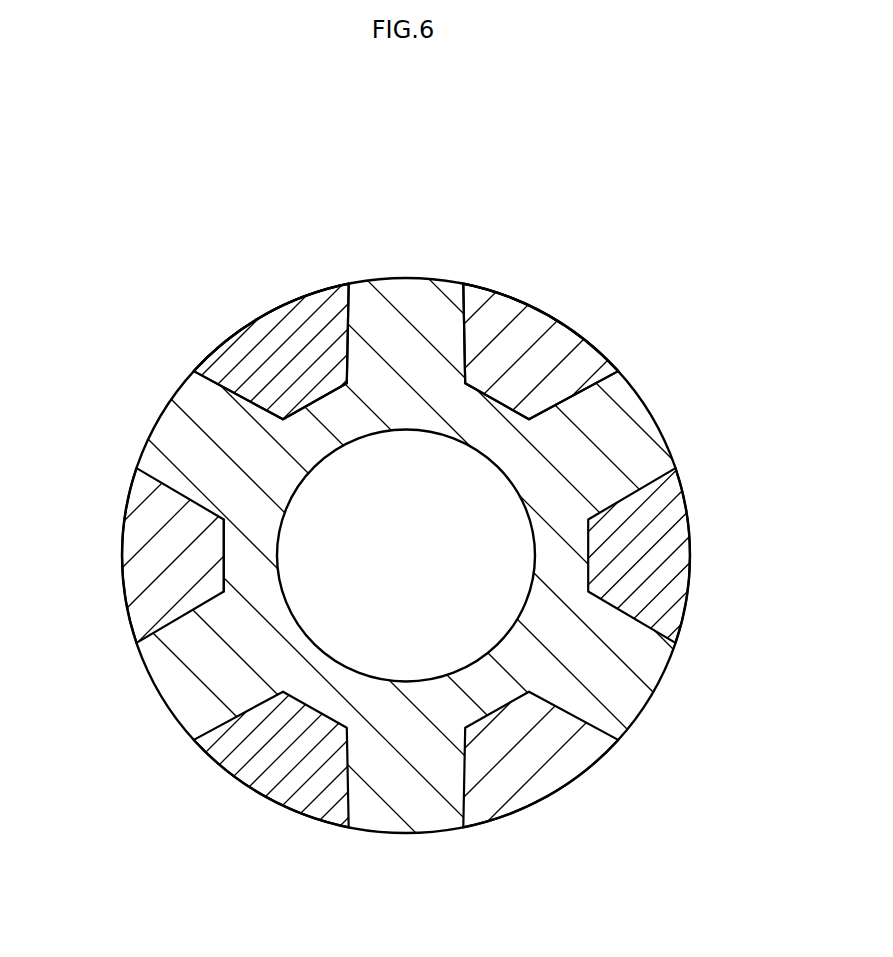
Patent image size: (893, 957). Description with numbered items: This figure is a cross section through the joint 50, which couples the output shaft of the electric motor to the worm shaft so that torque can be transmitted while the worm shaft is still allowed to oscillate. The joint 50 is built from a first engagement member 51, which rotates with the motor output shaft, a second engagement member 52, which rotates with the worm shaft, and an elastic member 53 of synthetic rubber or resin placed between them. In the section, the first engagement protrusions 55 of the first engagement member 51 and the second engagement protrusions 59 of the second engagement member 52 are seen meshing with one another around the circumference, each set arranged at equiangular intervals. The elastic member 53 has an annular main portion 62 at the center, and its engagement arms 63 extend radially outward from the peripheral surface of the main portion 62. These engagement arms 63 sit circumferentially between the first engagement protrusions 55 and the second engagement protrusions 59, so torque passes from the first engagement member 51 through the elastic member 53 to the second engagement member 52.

The joint 50 is at (626, 220).
The first engagement member 51 is at (542, 309).
The second engagement member 52 is at (278, 306).
The elastic member 53 is at (415, 278).
The first engagement protrusions 55 is at (567, 338).
The second engagement protrusions 59 is at (242, 345).
The main portion 62 is at (245, 575).
The engagement arms 63 is at (395, 292).